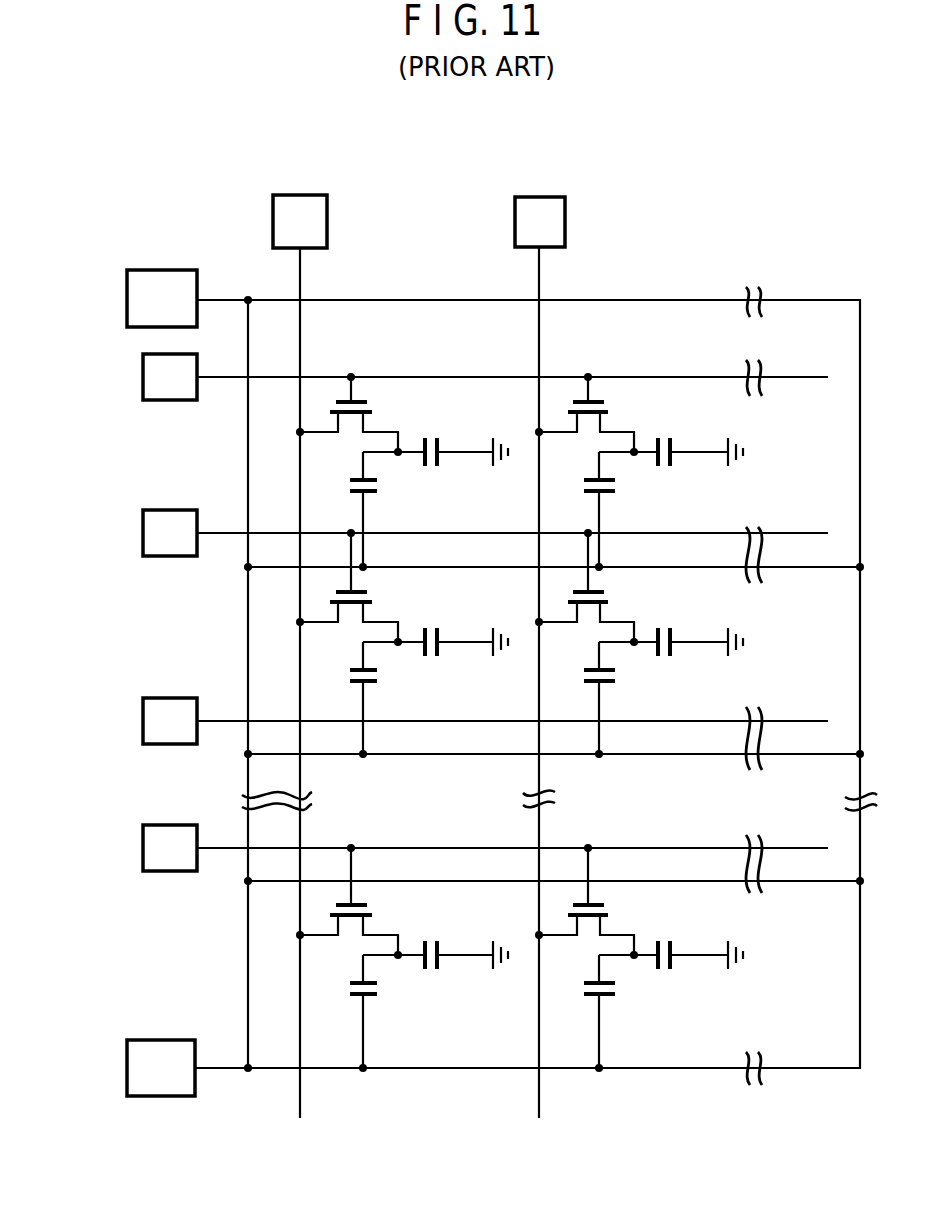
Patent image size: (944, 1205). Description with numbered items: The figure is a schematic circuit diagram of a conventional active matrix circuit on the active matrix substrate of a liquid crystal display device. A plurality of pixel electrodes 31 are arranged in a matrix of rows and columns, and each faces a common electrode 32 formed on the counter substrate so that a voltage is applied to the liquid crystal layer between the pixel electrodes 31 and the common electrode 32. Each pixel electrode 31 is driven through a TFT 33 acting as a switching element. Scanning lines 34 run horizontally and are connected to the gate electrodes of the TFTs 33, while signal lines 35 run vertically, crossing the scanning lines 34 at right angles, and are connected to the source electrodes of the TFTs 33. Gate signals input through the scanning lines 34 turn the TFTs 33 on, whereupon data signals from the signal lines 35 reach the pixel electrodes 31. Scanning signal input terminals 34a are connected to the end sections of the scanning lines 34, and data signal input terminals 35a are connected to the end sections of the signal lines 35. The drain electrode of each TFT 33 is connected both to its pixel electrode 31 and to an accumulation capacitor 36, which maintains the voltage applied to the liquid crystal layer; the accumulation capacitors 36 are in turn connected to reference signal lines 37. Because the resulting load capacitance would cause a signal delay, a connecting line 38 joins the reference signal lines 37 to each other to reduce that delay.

The pixel electrode 31 is at (421, 440).
The common electrode 32 is at (440, 440).
The TFT 33 is at (340, 399).
The scanning line 34 is at (213, 380).
The scanning signal input terminal 34a is at (143, 373).
The signal line 35 is at (300, 283).
The data signal input terminal 35a is at (297, 195).
The accumulation capacitor 36 is at (380, 487).
The reference signal line 37 is at (487, 568).
The connecting line 38 is at (248, 1002).